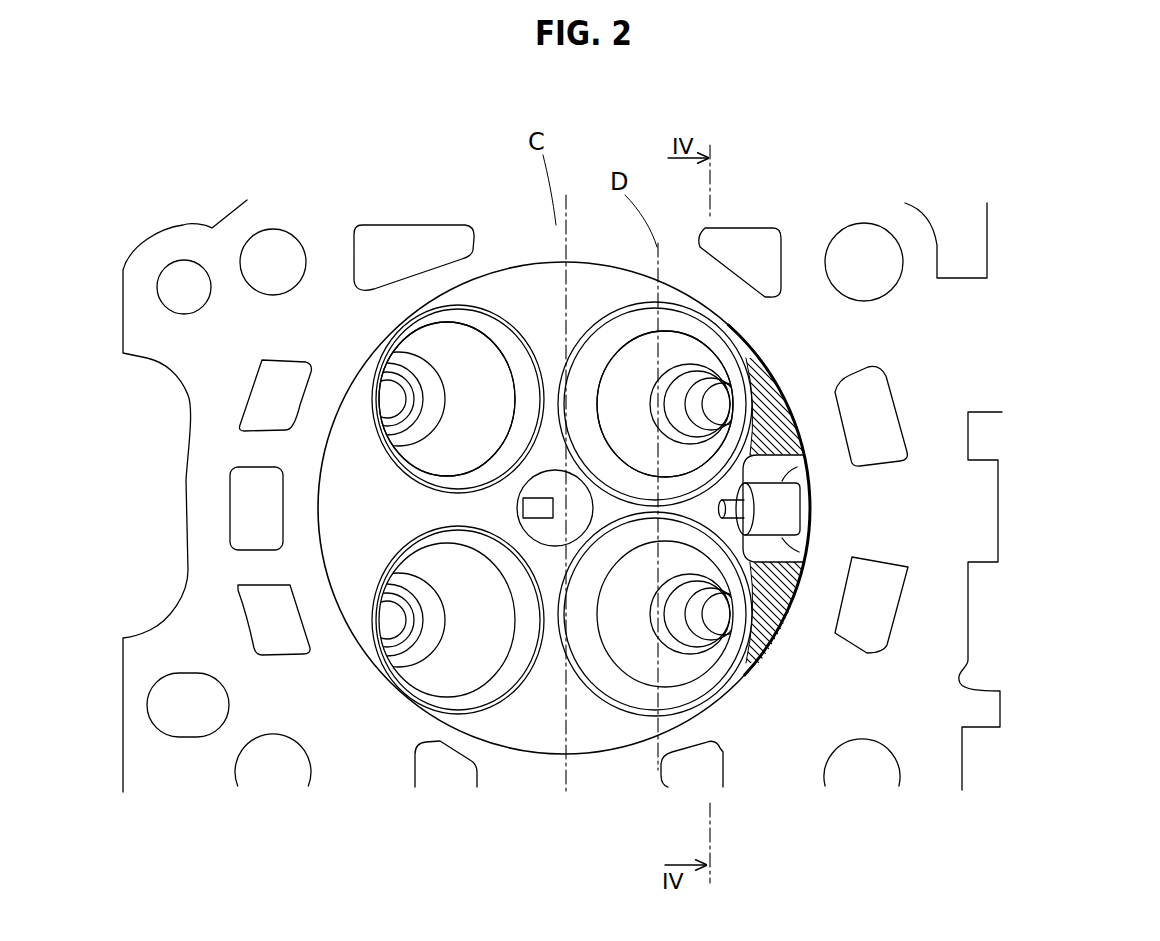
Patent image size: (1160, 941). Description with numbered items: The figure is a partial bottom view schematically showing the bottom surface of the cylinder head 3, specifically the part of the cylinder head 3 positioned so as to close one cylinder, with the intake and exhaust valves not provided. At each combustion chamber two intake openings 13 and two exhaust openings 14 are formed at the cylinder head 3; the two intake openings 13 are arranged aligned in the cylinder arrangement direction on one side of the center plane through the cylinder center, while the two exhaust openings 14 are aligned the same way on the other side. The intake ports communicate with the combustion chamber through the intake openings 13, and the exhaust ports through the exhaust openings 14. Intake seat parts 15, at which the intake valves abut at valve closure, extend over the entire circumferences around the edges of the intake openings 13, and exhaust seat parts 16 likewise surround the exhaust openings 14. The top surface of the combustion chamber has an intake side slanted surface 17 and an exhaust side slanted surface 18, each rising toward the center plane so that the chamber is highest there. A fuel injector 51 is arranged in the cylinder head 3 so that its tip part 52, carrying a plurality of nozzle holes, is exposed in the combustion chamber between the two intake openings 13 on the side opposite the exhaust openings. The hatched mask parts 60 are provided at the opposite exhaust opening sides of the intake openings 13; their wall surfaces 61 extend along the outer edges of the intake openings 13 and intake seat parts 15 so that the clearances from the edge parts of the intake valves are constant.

The cylinder head 3 is at (903, 327).
The intake opening 13 is at (736, 338).
The exhaust opening 14 is at (480, 352).
The intake seat part 15 is at (689, 348).
The exhaust seat part 16 is at (483, 320).
The intake side slanted surface 17 is at (592, 730).
The exhaust side slanted surface 18 is at (522, 723).
The fuel injector 51 is at (787, 512).
The tip part 52 is at (772, 452).
The mask part 60 is at (778, 395).
The wall surface 61 is at (745, 363).